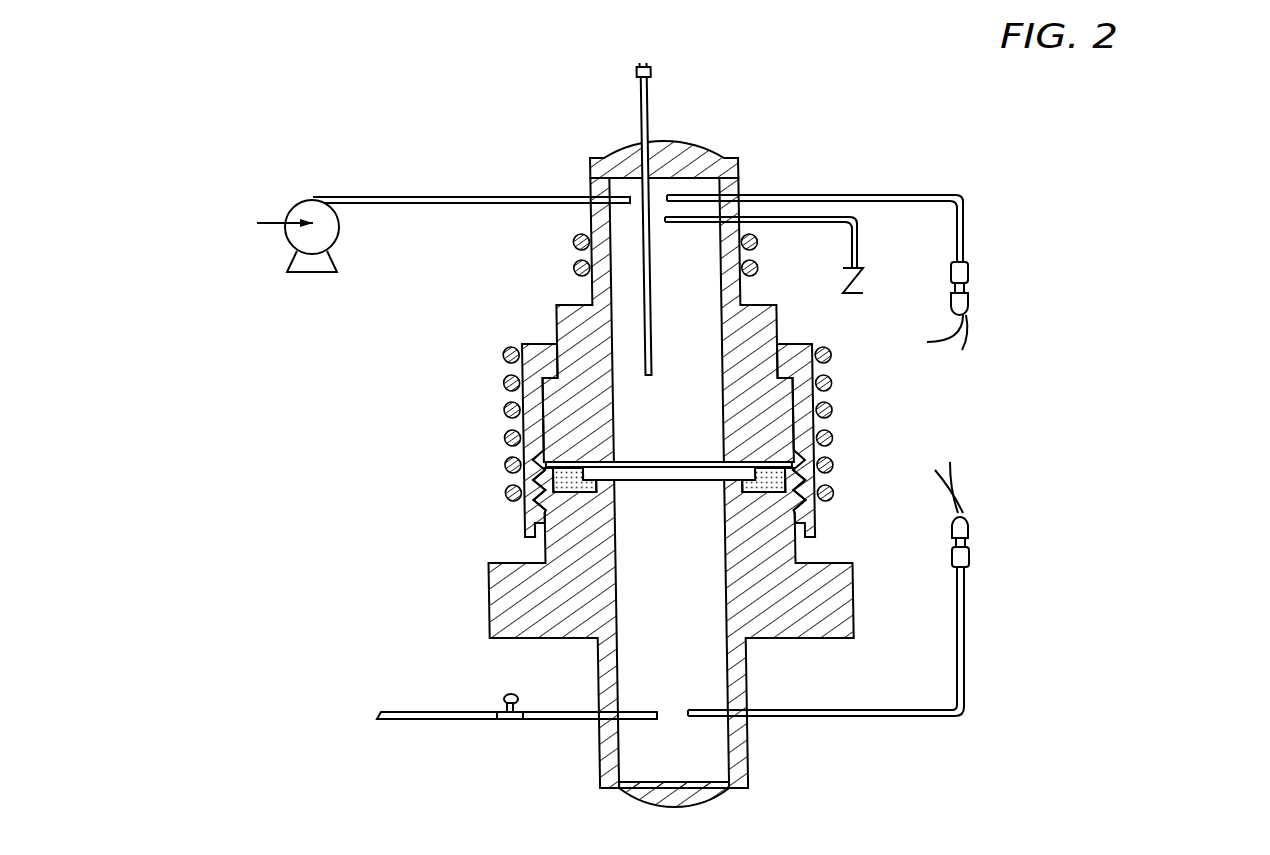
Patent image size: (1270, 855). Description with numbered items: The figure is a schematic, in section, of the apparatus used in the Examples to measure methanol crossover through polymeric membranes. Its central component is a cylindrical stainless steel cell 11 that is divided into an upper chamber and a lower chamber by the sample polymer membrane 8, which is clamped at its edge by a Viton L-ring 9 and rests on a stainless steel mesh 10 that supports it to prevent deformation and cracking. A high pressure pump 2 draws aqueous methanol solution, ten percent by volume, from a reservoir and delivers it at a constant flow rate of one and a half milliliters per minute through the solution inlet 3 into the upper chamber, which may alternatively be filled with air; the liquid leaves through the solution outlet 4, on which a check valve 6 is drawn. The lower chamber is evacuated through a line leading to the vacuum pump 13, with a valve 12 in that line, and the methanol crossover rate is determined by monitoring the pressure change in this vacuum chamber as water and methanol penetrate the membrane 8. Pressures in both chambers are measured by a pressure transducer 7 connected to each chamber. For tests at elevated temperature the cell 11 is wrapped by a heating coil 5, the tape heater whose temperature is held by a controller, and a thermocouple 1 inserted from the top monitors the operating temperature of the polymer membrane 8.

The thermocouple 1 is at (636, 98).
The high pressure pump 2 is at (313, 199).
The solution inlet 3 is at (471, 179).
The solution outlet 4 is at (757, 215).
The heating coil 5 is at (572, 268).
The check valve 6 is at (871, 292).
The pressure transducer 7 is at (984, 320).
The membrane 8 is at (655, 460).
The viton L-ring 9 is at (553, 480).
The stainless steel mesh 10 is at (662, 487).
The stainless steel cell 11 is at (512, 643).
The valve 12 is at (508, 724).
The vacuum pump line 13 is at (358, 722).